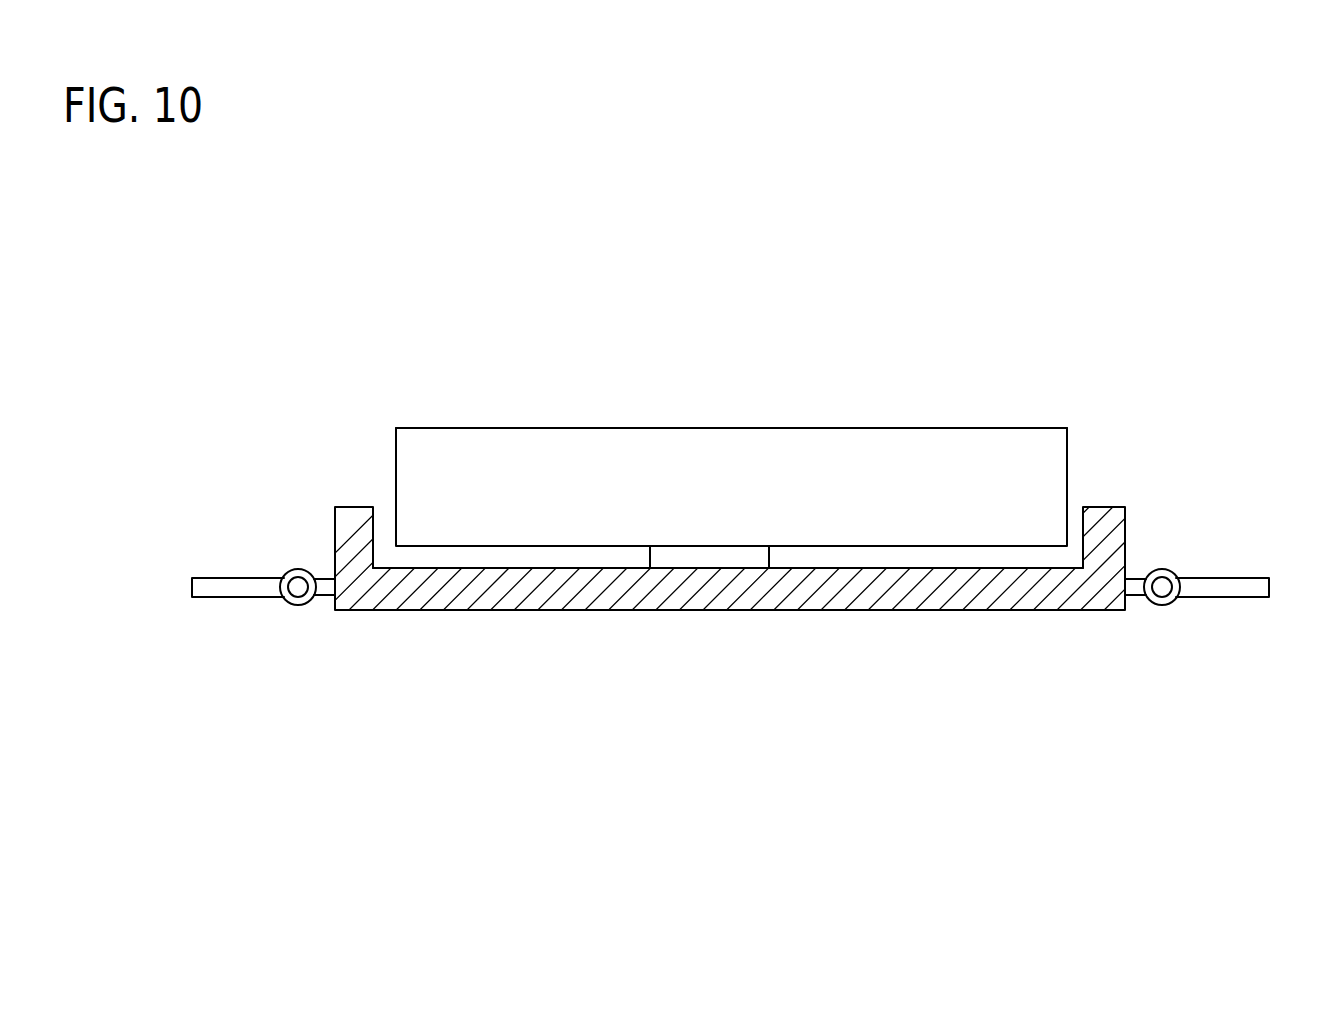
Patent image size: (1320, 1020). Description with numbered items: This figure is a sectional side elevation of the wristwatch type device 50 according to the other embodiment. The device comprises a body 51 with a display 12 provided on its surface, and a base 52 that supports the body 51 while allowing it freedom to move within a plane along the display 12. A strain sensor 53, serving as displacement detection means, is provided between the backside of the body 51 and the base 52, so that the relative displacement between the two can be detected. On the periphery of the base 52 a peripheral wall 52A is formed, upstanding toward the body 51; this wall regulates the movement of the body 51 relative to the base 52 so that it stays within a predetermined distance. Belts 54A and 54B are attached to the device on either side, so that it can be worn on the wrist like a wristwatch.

The wristwatch type device 50 is at (945, 395).
The display 12 is at (475, 428).
The body 51 is at (736, 455).
The base 52 is at (708, 587).
The peripheral wall 52A is at (352, 518).
The strain sensor 53 is at (770, 559).
The belt 54A is at (1237, 587).
The belt 54B is at (229, 587).